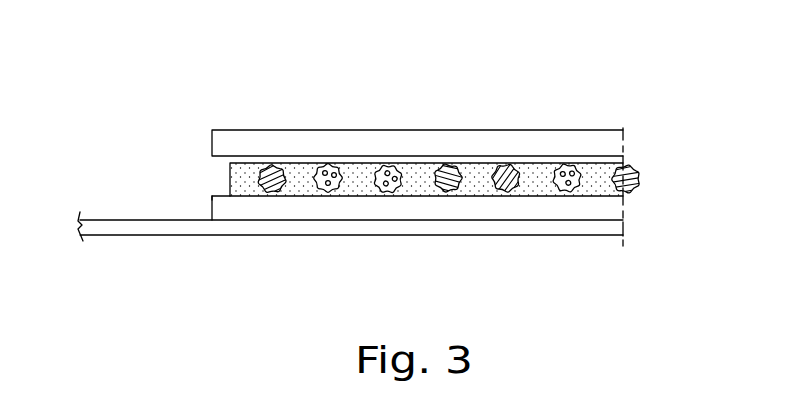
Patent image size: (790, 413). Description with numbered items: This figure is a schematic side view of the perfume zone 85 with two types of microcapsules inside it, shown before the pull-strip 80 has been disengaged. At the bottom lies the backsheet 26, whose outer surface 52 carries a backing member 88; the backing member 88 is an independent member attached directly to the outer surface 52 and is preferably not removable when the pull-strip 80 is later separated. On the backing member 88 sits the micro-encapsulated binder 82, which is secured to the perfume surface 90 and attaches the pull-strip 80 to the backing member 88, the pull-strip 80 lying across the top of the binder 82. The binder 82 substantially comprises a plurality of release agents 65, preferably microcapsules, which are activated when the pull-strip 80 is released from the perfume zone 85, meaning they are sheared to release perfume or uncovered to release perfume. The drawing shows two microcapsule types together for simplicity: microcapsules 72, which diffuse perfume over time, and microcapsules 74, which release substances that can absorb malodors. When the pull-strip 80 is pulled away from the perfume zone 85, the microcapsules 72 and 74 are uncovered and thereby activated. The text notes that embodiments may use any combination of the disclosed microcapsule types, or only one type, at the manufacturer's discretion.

The perfume zone 85 is at (591, 70).
The pull-strip 80 is at (311, 133).
The microcapsules 74 is at (511, 164).
The release agents 65 is at (435, 192).
The microcapsules 72 is at (360, 191).
The micro-encapsulated binder 82 is at (478, 196).
The backing member 88 is at (538, 215).
The backsheet 26 is at (113, 220).
The outer surface 52 is at (93, 220).
The perfume surface 90 is at (211, 195).